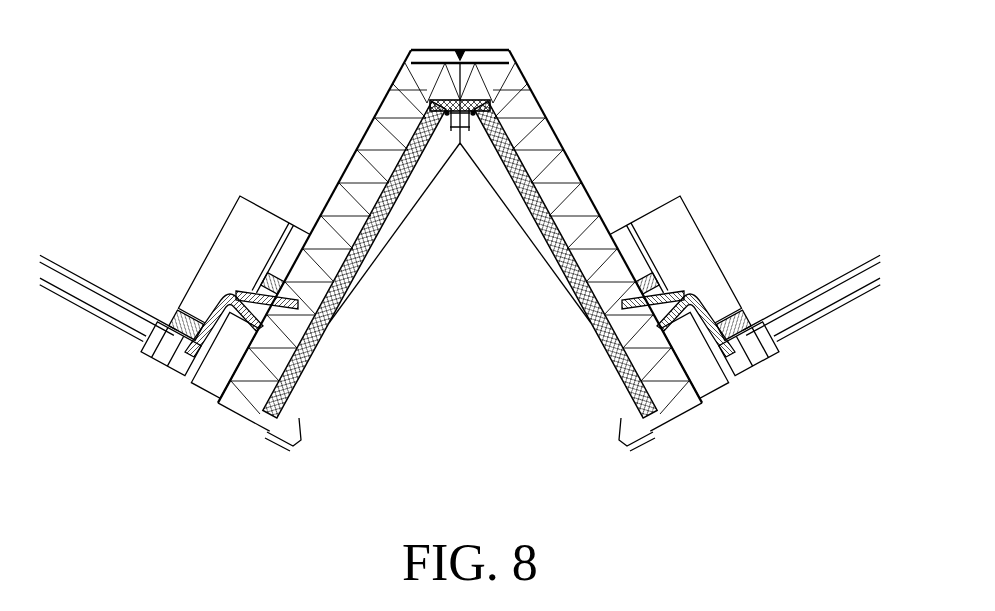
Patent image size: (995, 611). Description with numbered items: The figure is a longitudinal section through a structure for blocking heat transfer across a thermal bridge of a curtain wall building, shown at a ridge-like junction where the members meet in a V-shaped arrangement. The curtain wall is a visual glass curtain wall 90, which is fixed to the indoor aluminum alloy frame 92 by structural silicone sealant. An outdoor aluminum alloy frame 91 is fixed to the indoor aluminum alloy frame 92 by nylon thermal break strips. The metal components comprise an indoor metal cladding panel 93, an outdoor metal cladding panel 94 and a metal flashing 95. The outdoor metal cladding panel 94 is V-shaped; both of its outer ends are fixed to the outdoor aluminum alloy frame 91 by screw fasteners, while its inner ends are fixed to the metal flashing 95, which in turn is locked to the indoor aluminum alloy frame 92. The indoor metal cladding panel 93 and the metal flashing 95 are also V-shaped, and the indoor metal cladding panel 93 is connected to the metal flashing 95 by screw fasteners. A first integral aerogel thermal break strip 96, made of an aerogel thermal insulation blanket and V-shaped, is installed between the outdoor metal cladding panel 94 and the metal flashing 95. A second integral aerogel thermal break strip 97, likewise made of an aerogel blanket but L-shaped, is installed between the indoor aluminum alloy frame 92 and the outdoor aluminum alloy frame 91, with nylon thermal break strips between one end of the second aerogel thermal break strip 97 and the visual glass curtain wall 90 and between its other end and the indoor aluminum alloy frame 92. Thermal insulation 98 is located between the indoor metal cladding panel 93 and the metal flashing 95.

The visual glass curtain wall 90 is at (82, 303).
The outdoor aluminum alloy frame 91 is at (187, 367).
The indoor aluminum alloy frame 92 is at (232, 213).
The indoor metal cladding panel 93 is at (350, 165).
The outdoor metal cladding panel 94 is at (387, 247).
The metal flashing 95 is at (403, 186).
The first integral aerogel thermal break strip 96 is at (548, 258).
The second integral aerogel thermal break strip 97 is at (715, 278).
The thermal insulation 98 is at (550, 160).